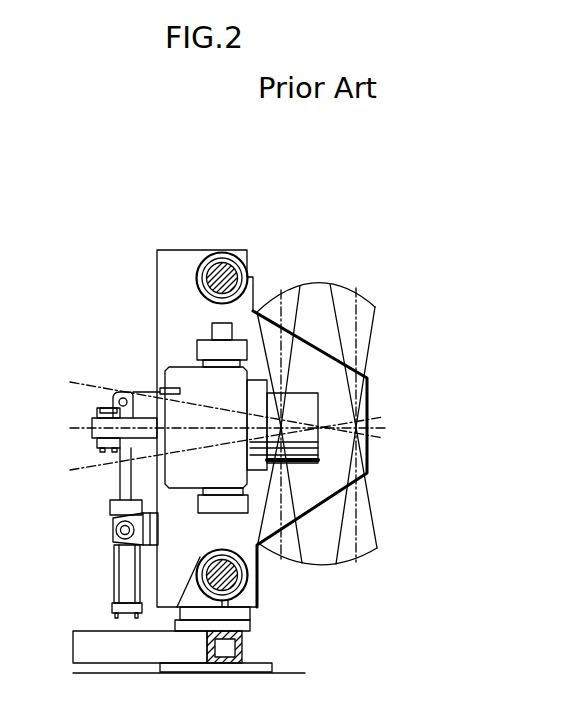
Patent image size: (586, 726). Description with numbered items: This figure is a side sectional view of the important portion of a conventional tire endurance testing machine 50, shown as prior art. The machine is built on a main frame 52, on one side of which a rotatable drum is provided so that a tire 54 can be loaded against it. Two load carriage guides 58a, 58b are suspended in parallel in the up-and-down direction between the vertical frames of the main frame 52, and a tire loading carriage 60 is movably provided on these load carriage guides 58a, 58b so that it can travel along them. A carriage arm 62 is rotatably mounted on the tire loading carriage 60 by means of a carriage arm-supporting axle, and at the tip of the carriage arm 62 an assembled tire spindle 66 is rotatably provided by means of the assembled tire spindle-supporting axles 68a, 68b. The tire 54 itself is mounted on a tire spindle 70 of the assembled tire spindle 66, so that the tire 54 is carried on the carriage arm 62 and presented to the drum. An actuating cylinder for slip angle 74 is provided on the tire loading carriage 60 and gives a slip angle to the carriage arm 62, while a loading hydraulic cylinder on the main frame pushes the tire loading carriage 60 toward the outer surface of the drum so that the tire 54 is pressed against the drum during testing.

The tire endurance testing machine 50 is at (229, 179).
The main frame 52 is at (100, 640).
The tire 54 is at (346, 290).
The load carriage guide 58a is at (222, 262).
The load carriage guide 58b is at (247, 593).
The tire loading carriage 60 is at (167, 290).
The carriage arm 62 is at (207, 502).
The assembled tire spindle 66 is at (160, 376).
The assembled tire spindle-supporting axle 68a is at (222, 358).
The assembled tire spindle-supporting axle 68b is at (225, 495).
The tire spindle 70 is at (310, 408).
The actuating cylinder for slip angle 74 is at (125, 575).